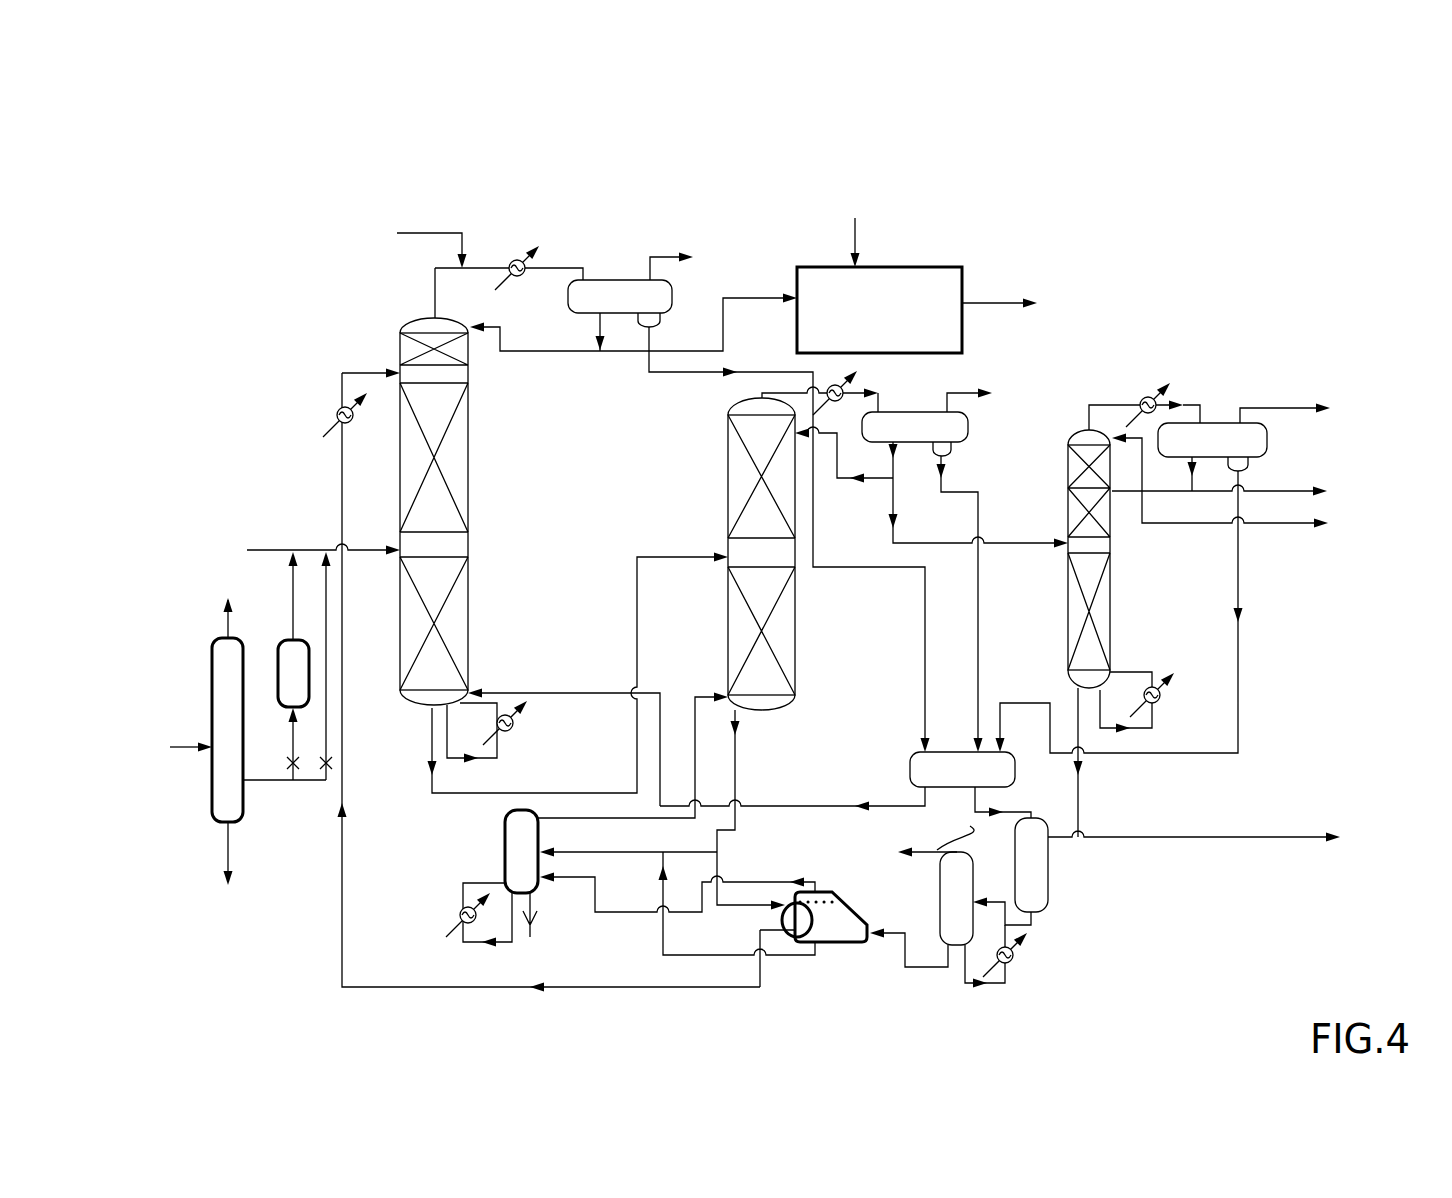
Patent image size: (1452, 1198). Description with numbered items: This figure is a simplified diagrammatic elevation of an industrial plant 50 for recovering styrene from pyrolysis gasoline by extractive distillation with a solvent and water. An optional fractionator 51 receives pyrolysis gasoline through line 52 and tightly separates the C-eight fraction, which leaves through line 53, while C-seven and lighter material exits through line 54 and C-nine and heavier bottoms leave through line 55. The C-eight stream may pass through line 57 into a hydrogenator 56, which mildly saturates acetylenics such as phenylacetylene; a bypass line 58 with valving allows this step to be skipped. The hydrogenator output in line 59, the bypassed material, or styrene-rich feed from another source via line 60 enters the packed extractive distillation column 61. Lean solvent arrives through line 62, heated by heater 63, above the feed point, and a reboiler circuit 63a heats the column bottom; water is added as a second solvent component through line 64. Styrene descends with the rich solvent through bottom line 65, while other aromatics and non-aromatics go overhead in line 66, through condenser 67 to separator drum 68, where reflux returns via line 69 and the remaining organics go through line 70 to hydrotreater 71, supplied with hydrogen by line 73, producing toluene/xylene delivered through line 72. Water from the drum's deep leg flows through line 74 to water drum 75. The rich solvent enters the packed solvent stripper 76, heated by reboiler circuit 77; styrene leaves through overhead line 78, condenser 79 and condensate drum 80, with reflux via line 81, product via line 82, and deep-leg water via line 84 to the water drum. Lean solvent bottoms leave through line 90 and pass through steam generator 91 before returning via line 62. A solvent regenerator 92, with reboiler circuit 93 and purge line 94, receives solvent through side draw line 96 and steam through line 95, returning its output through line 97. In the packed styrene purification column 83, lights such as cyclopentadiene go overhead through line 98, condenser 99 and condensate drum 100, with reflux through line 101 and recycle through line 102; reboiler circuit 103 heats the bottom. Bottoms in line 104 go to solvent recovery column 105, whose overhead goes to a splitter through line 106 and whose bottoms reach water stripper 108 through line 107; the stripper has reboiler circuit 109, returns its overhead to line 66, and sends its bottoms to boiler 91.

The plant 50 is at (326, 335).
The fractionator 51 is at (210, 797).
The line 52 is at (172, 747).
The line 53 is at (275, 782).
The line 54 is at (228, 630).
The line 55 is at (228, 848).
The hydrogenator 56 is at (280, 645).
The line 57 is at (291, 745).
The bypass line 58 is at (328, 611).
The line 59 is at (291, 596).
The line 60 is at (250, 550).
The extractive distillation column 61 is at (470, 455).
The line 62 is at (340, 473).
The heater 63 is at (337, 412).
The reboiler circuit 63a is at (528, 741).
The line 64 is at (553, 690).
The bottom line 65 is at (430, 742).
The line 66 is at (433, 290).
The condenser 67 is at (517, 259).
The separator drum 68 is at (618, 280).
The line 69 is at (547, 352).
The line 70 is at (682, 352).
The hydrotreater 71 is at (797, 293).
The line 72 is at (990, 302).
The line 73 is at (858, 233).
The line 74 is at (673, 374).
The water drum 75 is at (912, 752).
The solvent stripper 76 is at (727, 530).
The reboiler circuit 77 is at (908, 770).
The overhead line 78 is at (752, 392).
The condenser 79 is at (828, 386).
The condensate drum 80 is at (905, 412).
The line 81 is at (868, 480).
The line 82 is at (953, 543).
The styrene purification column 83 is at (1063, 630).
The line 84 is at (960, 492).
The line 90 is at (731, 760).
The steam generator 91 is at (862, 912).
The solvent regenerator 92 is at (505, 876).
The reboiler circuit 93 is at (463, 899).
The purge line 94 is at (533, 912).
The line 95 is at (623, 910).
The side draw line 96 is at (717, 846).
The line 97 is at (695, 753).
The line 98 is at (1108, 405).
The condenser 99 is at (1148, 397).
The condensate drum 100 is at (1222, 423).
The line 101 is at (1154, 466).
The line 102 is at (1236, 496).
The reboiler circuit 103 is at (1142, 655).
The line 104 is at (1050, 705).
The solvent recovery column 105 is at (1050, 870).
The line 106 is at (1120, 835).
The line 107 is at (1034, 918).
The water stripper 108 is at (960, 947).
The reboiler circuit 109 is at (1035, 978).